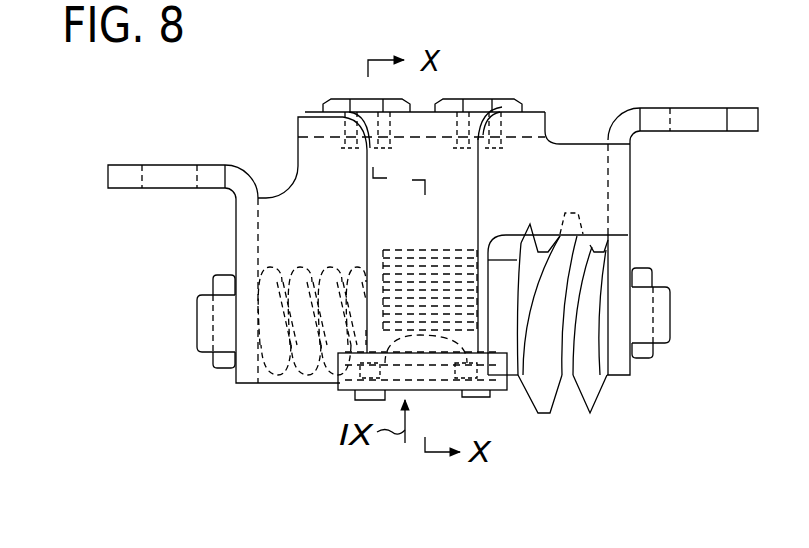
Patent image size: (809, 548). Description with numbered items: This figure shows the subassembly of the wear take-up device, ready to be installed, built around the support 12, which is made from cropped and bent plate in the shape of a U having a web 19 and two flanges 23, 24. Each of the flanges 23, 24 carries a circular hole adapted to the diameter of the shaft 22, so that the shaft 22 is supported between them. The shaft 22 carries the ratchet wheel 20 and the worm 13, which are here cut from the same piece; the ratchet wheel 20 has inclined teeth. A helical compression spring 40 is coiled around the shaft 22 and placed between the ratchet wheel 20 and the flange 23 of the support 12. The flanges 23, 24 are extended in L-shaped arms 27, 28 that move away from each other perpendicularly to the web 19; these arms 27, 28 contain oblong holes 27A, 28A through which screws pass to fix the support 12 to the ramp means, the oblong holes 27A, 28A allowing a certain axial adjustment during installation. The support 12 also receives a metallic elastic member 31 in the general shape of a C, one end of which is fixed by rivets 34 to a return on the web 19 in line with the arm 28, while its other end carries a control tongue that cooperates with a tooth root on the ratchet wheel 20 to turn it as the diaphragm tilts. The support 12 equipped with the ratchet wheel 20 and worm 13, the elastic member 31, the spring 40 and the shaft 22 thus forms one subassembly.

The support 12 is at (295, 150).
The worm 13 is at (604, 398).
The web 19 is at (277, 238).
The ratchet wheel 20 is at (417, 244).
The shaft 22 is at (658, 318).
The flange 23 is at (237, 240).
The flange 24 is at (631, 190).
The arm 27 is at (131, 176).
The oblong hole 27A is at (183, 172).
The arm 28 is at (712, 117).
The oblong hole 28A is at (680, 92).
The elastic member 31 is at (494, 176).
The rivets 34 is at (339, 102).
The helical compression spring 40 is at (300, 376).